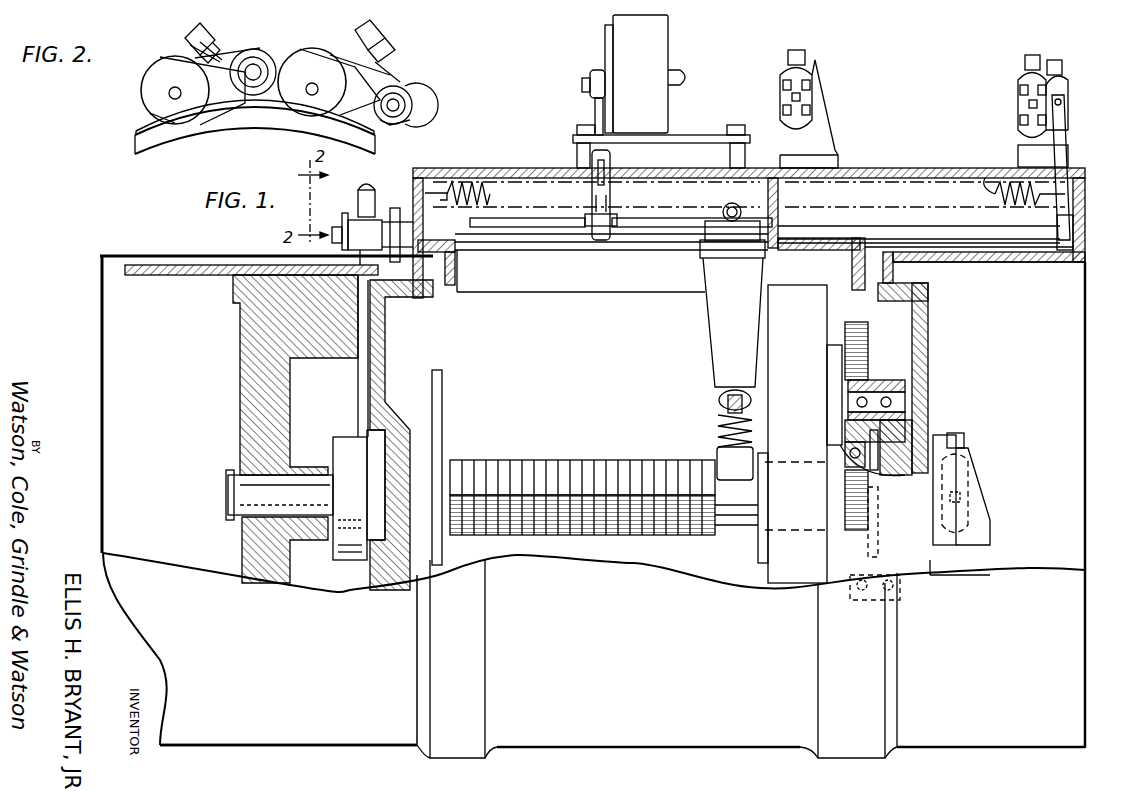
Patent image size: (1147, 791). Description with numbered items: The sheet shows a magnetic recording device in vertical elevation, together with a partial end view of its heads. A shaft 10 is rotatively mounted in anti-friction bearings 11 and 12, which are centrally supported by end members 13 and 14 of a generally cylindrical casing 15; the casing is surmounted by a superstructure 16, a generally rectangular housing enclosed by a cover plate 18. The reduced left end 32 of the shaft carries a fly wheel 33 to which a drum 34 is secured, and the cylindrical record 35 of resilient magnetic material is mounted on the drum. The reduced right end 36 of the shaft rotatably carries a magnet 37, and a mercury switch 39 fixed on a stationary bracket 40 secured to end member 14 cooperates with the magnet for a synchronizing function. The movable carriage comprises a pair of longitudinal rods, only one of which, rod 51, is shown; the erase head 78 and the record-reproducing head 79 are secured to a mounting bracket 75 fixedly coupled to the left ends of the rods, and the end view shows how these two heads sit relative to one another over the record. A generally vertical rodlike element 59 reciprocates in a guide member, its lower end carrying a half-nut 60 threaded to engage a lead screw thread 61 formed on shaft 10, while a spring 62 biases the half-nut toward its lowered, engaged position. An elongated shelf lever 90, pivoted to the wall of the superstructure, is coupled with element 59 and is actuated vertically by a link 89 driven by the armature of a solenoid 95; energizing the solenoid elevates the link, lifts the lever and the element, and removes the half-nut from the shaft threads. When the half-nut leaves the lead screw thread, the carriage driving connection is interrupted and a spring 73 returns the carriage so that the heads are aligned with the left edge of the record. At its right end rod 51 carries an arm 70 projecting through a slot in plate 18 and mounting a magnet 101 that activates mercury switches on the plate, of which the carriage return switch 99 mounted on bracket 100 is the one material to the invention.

In FIG. 1, the shaft 10 is at (548, 470).
In FIG. 1, the anti-friction bearing 11 is at (372, 460).
In FIG. 1, the anti-friction bearing 12 is at (845, 462).
In FIG. 1, the end member 13 is at (385, 360).
In FIG. 1, the end member 14 is at (920, 335).
In FIG. 1, the casing 15 is at (555, 735).
In FIG. 1, the superstructure 16 is at (832, 238).
In FIG. 1, the cover plate 18 is at (910, 178).
In FIG. 1, the left end of shaft 32 is at (258, 489).
In FIG. 1, the fly wheel 33 is at (248, 422).
In FIG. 2, the drum 34 is at (185, 140).
In FIG. 1, the drum 34 is at (190, 278).
In FIG. 2, the cylindrical record 35 is at (255, 115).
In FIG. 1, the cylindrical record 35 is at (148, 270).
In FIG. 1, the right end of shaft 36 is at (940, 445).
In FIG. 1, the magnet 37 is at (965, 497).
In FIG. 1, the mercury switch 39 is at (975, 460).
In FIG. 1, the stationary bracket 40 is at (980, 488).
In FIG. 1, the longitudinal rod 51 is at (1035, 235).
In FIG. 1, the rodlike element 59 is at (720, 392).
In FIG. 1, the half-nut 60 is at (722, 458).
In FIG. 1, the lead screw thread 61 is at (495, 455).
In FIG. 1, the spring 62 is at (718, 425).
In FIG. 1, the arm 70 is at (1062, 178).
In FIG. 1, the spring 73 is at (470, 182).
In FIG. 1, the mounting bracket 75 is at (398, 210).
In FIG. 2, the erase head 78 is at (328, 35).
In FIG. 2, the record-reproducing head 79 is at (142, 88).
In FIG. 1, the link 89 is at (590, 195).
In FIG. 1, the shelf lever 90 is at (553, 227).
In FIG. 1, the solenoid 95 is at (670, 48).
In FIG. 1, the carriage return switch 99 is at (800, 75).
In FIG. 1, the bracket 100 is at (822, 118).
In FIG. 1, the magnet 101 is at (1070, 95).